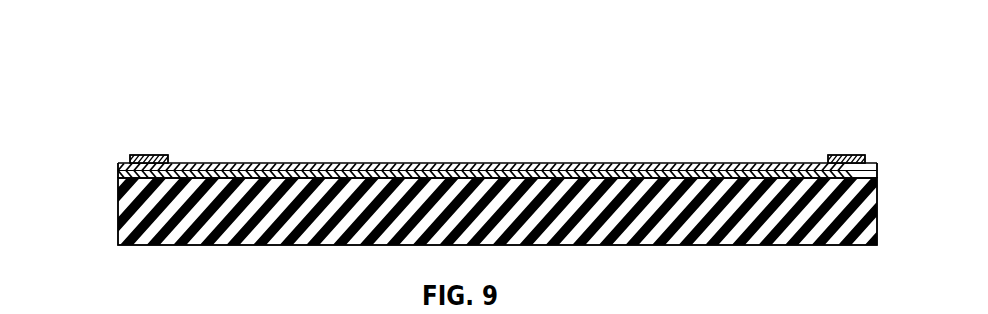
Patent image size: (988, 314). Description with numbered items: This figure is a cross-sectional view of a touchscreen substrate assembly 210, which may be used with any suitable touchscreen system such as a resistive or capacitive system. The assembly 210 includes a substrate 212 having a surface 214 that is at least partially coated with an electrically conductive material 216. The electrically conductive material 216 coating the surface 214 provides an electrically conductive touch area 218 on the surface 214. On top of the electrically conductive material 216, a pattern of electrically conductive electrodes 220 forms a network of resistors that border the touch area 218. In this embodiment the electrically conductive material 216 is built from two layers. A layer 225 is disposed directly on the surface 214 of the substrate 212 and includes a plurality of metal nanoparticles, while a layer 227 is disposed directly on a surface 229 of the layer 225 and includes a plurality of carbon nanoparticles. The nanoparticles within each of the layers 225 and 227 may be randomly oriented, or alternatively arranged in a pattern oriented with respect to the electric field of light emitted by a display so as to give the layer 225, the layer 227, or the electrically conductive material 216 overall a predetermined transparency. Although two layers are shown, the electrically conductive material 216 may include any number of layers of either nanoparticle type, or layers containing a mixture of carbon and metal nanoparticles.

The touchscreen substrate assembly 210 is at (135, 59).
The substrate 212 is at (479, 222).
The surface 214 is at (443, 165).
The electrically conductive material 216 is at (524, 152).
The electrically conductive touch area 218 is at (320, 150).
The electrically conductive electrodes 220 is at (156, 145).
The layer 225 is at (877, 176).
The layer 227 is at (117, 166).
The surface 229 is at (228, 163).